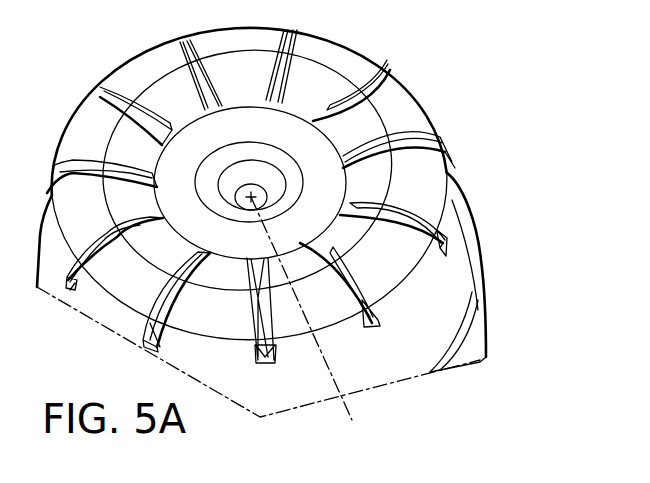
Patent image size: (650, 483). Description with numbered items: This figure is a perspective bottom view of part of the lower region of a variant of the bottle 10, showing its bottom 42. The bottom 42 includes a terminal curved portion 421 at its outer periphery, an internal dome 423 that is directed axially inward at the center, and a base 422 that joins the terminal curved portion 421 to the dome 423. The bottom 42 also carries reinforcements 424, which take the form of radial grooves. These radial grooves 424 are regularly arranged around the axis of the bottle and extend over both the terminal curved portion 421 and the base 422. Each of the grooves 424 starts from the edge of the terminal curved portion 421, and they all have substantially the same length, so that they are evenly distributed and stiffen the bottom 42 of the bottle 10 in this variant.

The bottle 10 is at (488, 303).
The bottom 42 is at (458, 143).
The terminal curved portion 421 is at (445, 207).
The base 422 is at (167, 97).
The dome 423 is at (267, 173).
The reinforcements 424 is at (150, 304).